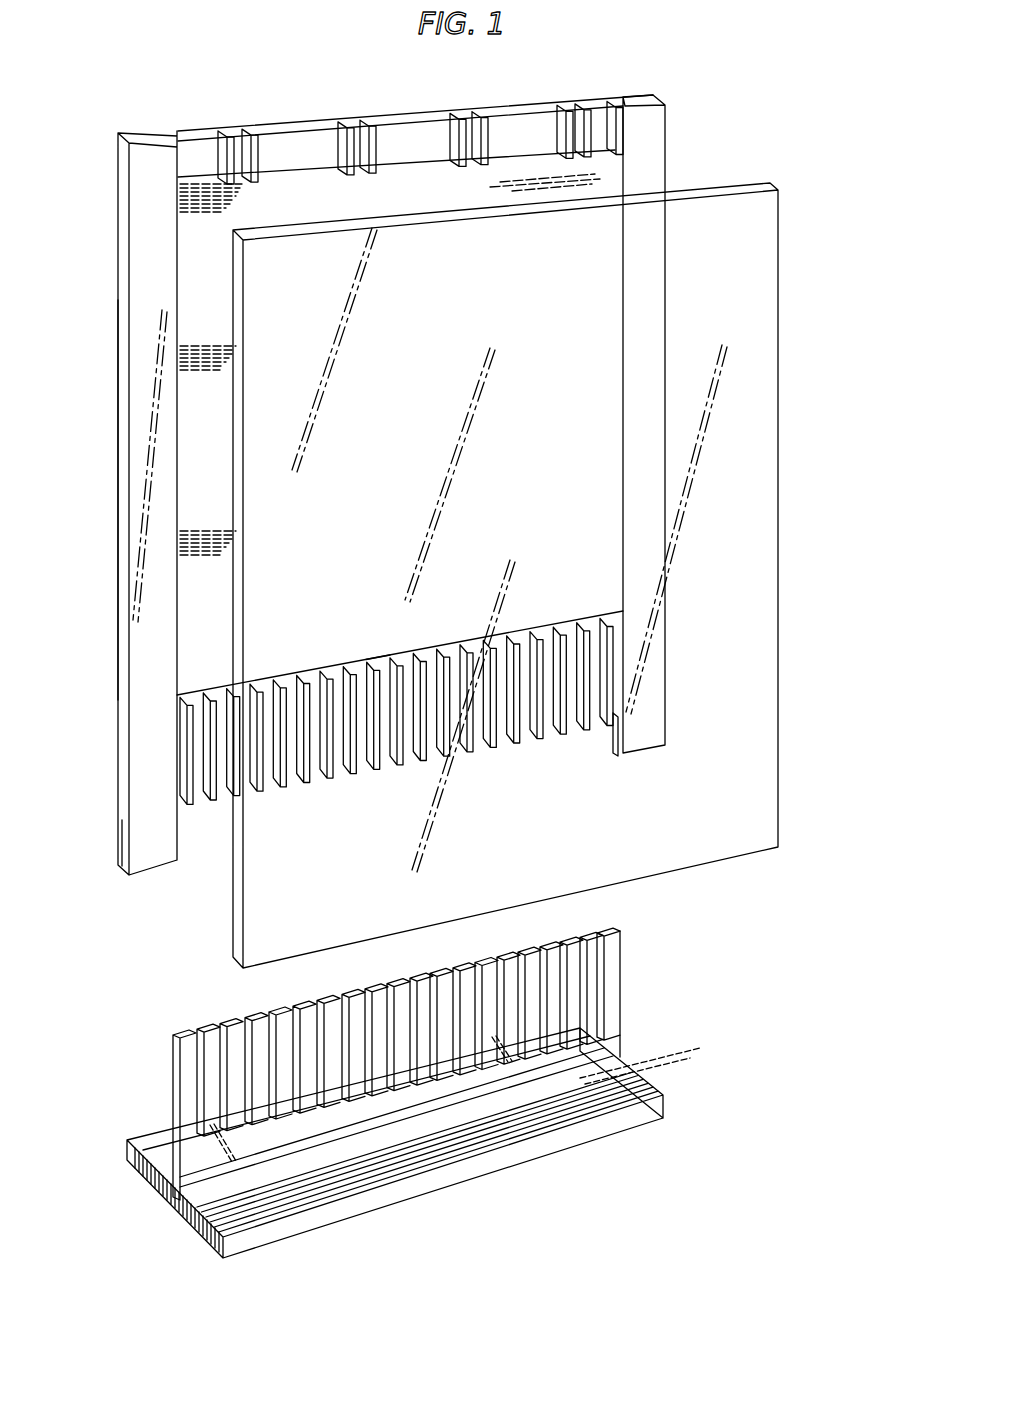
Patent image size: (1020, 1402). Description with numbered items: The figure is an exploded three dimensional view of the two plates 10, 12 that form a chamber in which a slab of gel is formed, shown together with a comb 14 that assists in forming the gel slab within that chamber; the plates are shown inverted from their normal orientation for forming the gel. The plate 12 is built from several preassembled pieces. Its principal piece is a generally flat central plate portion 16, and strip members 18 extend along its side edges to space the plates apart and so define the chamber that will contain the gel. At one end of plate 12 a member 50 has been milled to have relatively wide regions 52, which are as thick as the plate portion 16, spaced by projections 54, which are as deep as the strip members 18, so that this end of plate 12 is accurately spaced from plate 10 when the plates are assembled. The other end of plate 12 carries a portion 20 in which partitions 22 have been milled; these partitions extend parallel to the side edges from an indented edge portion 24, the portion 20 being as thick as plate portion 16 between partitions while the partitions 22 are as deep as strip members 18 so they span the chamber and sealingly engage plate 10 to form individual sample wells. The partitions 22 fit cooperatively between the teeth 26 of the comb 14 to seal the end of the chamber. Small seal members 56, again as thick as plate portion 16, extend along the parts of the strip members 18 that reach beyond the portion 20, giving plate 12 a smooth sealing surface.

The plate 10 is at (718, 186).
The plate 12 is at (600, 92).
The comb 14 is at (563, 1138).
The central plate portion 16 is at (313, 217).
The strip members 18 is at (660, 122).
The portion 20 is at (117, 763).
The partitions 22 is at (316, 762).
The indented edge portion 24 is at (372, 768).
The teeth 26 is at (584, 948).
The member 50 is at (286, 118).
The wide regions 52 is at (411, 163).
The projections 54 is at (252, 134).
The seal members 56 is at (117, 838).